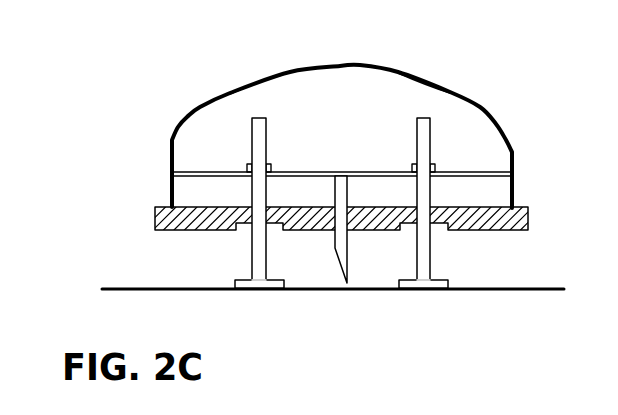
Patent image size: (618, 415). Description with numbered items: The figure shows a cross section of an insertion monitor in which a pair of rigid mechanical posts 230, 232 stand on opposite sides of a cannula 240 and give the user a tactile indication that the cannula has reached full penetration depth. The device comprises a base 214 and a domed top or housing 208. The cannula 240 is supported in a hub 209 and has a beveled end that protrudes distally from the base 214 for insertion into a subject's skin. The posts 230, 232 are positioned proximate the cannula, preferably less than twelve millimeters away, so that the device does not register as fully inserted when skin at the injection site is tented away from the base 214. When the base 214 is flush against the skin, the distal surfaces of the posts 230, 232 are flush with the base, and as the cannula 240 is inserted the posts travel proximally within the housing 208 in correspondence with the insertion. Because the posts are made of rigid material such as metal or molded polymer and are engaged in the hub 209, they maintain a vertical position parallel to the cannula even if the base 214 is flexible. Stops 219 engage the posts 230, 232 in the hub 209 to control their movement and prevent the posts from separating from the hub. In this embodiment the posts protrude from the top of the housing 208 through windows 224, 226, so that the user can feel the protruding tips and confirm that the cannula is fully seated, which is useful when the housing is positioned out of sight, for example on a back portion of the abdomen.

The housing 208 is at (482, 107).
The hub 209 is at (488, 187).
The base 214 is at (507, 218).
The stops 219 is at (248, 167).
The window 224 is at (257, 78).
The window 226 is at (423, 72).
The mechanical post 230 is at (259, 244).
The mechanical post 232 is at (423, 242).
The cannula 240 is at (338, 265).